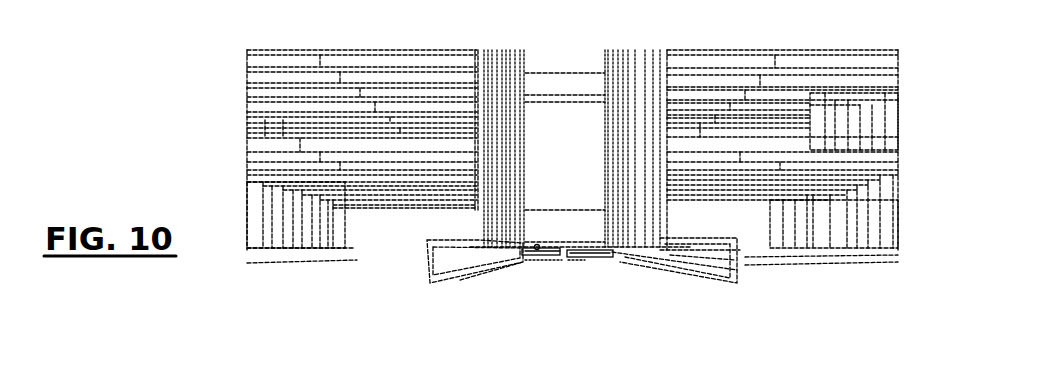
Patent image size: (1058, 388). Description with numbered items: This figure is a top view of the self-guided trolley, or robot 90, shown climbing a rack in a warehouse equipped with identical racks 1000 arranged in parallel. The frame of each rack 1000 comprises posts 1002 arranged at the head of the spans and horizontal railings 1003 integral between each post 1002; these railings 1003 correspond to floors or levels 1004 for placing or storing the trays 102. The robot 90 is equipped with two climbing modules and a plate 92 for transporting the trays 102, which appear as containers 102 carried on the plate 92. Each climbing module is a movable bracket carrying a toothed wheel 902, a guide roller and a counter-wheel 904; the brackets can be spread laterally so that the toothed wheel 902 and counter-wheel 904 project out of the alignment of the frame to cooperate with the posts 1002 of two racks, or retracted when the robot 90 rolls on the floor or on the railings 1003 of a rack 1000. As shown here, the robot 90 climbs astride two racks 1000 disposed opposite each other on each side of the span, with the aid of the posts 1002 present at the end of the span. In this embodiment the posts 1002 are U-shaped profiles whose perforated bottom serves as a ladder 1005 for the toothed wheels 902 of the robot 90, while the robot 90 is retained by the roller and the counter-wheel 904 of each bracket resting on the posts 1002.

The rack 1000 is at (260, 143).
The horizontal railing 1003 is at (484, 50).
The robot 90 is at (540, 80).
The level 1004 is at (937, 137).
The tray 102 is at (355, 202).
The post 1002 is at (430, 259).
The ladder 1005 is at (690, 260).
The counter-wheel 904 is at (525, 258).
The toothed wheel 902 is at (545, 262).
The plate 92 is at (555, 262).